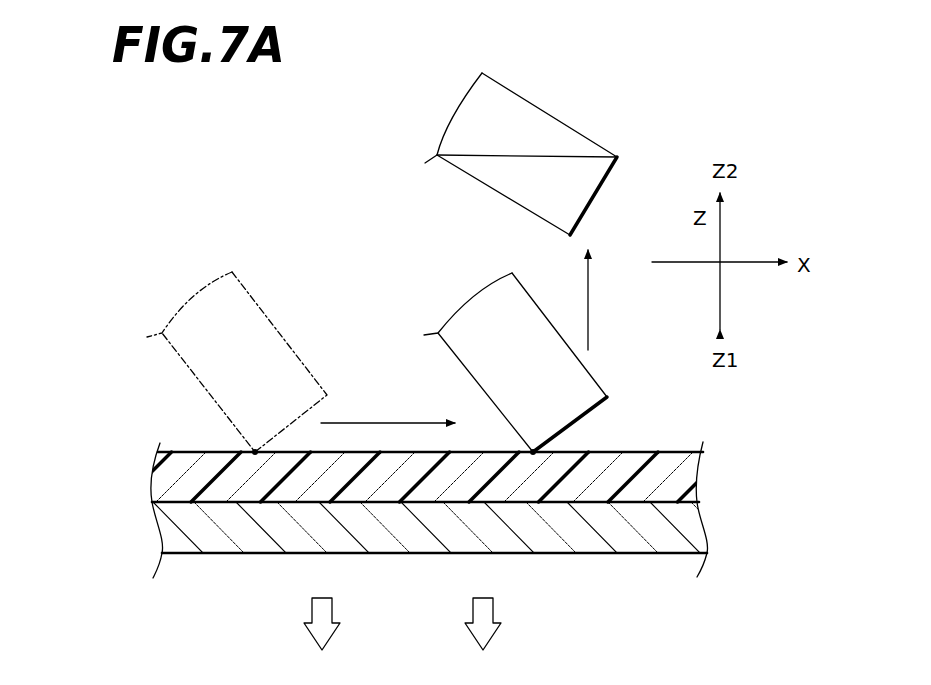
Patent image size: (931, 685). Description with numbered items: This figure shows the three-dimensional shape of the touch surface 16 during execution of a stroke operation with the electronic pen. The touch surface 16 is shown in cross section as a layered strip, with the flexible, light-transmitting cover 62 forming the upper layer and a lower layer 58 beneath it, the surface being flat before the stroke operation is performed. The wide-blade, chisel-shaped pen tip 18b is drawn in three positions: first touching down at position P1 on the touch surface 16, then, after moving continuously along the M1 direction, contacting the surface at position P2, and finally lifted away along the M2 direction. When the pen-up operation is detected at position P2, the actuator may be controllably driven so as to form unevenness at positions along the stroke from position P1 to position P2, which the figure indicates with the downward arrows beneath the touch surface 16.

The touch surface 16 is at (434, 500).
The cover 62 is at (175, 483).
The lower layer / base of medium 58 is at (175, 537).
The pen tip 18b is at (550, 140).
The position P1 is at (247, 450).
The position P2 is at (540, 460).
The direction M1 is at (388, 411).
The direction M2 is at (605, 300).